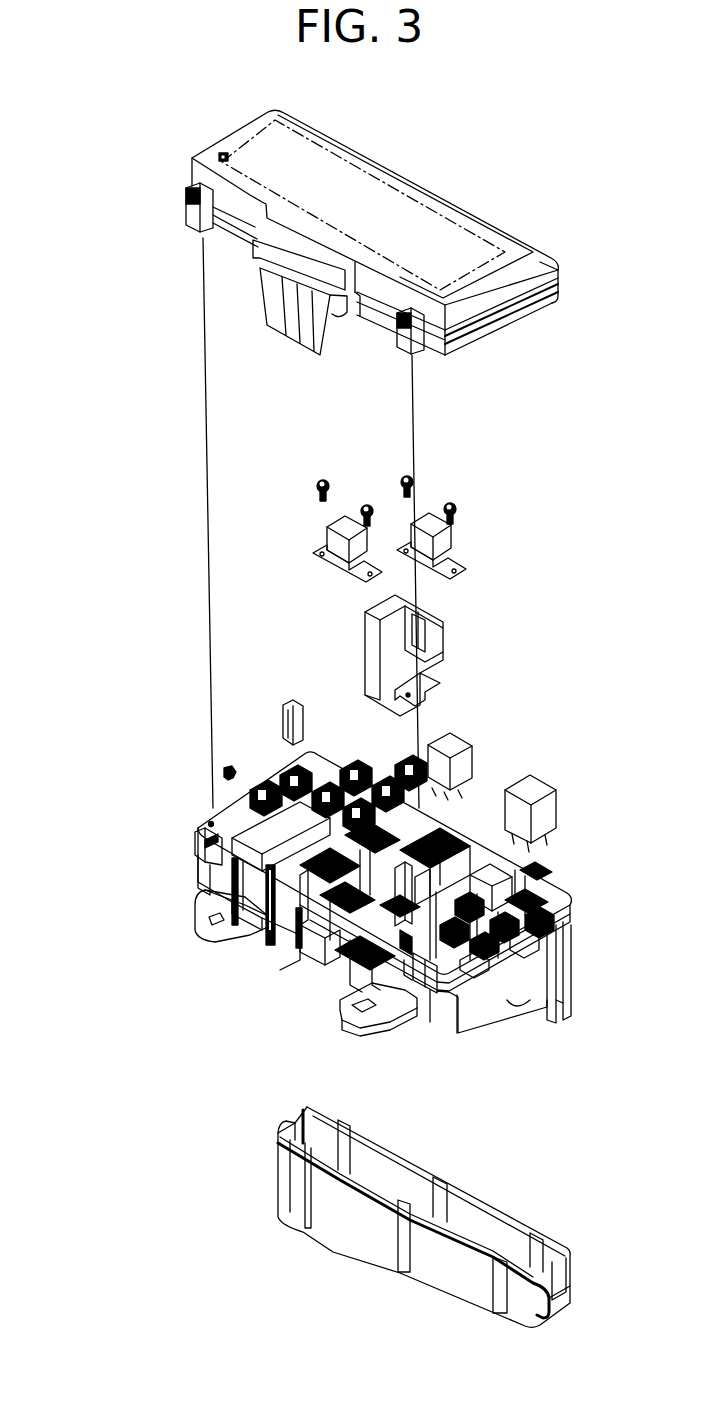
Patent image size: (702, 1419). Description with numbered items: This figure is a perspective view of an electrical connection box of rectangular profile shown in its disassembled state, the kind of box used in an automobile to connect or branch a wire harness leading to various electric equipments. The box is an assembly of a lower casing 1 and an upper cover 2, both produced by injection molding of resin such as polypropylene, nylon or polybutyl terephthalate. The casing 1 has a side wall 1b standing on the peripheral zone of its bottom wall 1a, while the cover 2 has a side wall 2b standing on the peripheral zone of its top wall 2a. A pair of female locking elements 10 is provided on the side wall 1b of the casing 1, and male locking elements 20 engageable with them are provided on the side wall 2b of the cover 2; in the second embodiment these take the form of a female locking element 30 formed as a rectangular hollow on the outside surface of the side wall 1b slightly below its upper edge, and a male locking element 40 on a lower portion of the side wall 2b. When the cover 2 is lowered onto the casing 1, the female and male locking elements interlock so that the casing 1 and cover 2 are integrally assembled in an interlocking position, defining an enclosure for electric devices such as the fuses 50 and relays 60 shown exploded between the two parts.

The lower casing 1 is at (550, 870).
The bottom wall 1a is at (497, 1010).
The side wall 1b is at (565, 948).
The upper cover 2 is at (438, 159).
The top wall 2a is at (310, 177).
The side wall 2b is at (523, 272).
The female locking element 10 is at (195, 848).
The female locking element 30 is at (418, 967).
The male locking element 20 is at (187, 215).
The male locking element 40 is at (398, 337).
The fuse 50 is at (447, 547).
The relay 60 is at (537, 783).